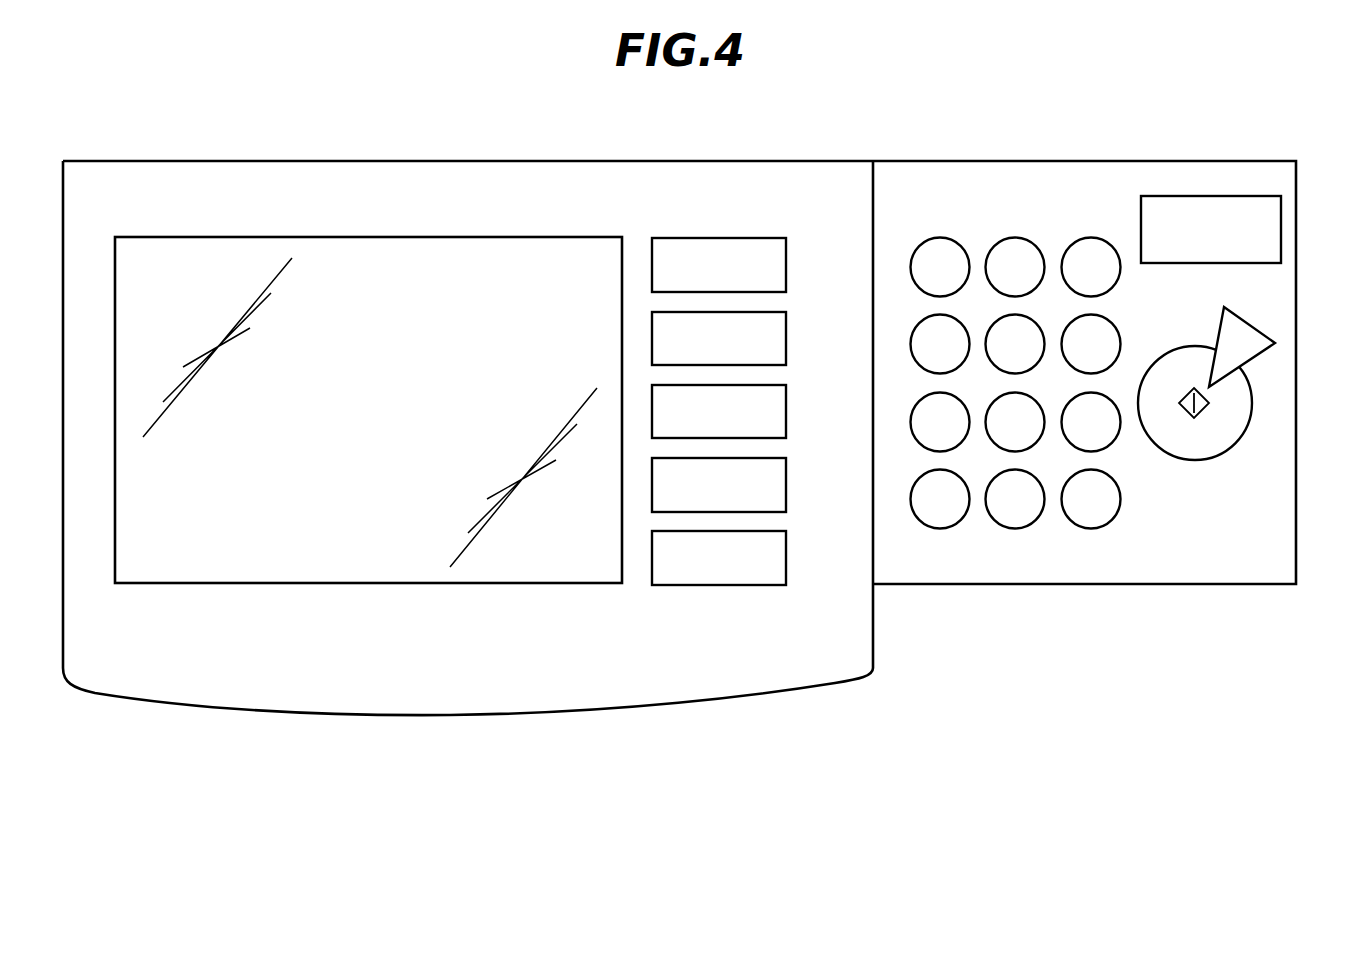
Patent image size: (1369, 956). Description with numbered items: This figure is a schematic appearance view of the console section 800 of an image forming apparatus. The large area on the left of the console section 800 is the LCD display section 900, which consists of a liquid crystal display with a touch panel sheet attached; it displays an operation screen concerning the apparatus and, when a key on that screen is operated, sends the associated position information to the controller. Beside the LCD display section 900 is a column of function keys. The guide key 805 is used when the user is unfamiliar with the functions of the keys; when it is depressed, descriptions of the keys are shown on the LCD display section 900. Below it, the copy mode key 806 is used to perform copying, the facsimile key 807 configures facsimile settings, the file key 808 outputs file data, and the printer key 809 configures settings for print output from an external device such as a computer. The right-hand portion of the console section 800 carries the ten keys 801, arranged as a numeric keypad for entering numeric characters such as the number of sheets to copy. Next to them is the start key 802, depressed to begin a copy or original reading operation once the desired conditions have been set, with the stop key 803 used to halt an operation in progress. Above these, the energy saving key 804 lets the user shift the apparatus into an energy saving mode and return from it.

The console section 800 is at (374, 160).
The ten keys 801 is at (1120, 232).
The start key 802 is at (1192, 460).
The stop key 803 is at (1253, 325).
The energy saving key 804 is at (1281, 230).
The guide key 805 is at (786, 265).
The copy mode key 806 is at (786, 338).
The facsimile key 807 is at (786, 411).
The file key 808 is at (786, 485).
The printer key 809 is at (786, 558).
The LCD display section 900 is at (405, 583).